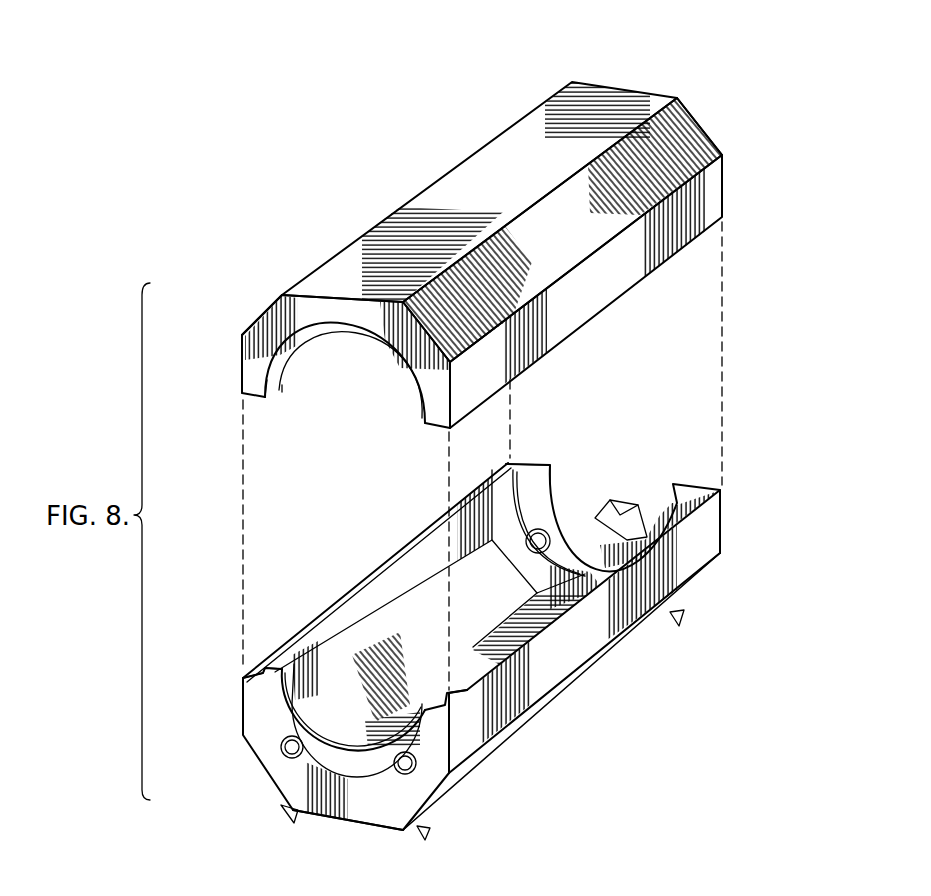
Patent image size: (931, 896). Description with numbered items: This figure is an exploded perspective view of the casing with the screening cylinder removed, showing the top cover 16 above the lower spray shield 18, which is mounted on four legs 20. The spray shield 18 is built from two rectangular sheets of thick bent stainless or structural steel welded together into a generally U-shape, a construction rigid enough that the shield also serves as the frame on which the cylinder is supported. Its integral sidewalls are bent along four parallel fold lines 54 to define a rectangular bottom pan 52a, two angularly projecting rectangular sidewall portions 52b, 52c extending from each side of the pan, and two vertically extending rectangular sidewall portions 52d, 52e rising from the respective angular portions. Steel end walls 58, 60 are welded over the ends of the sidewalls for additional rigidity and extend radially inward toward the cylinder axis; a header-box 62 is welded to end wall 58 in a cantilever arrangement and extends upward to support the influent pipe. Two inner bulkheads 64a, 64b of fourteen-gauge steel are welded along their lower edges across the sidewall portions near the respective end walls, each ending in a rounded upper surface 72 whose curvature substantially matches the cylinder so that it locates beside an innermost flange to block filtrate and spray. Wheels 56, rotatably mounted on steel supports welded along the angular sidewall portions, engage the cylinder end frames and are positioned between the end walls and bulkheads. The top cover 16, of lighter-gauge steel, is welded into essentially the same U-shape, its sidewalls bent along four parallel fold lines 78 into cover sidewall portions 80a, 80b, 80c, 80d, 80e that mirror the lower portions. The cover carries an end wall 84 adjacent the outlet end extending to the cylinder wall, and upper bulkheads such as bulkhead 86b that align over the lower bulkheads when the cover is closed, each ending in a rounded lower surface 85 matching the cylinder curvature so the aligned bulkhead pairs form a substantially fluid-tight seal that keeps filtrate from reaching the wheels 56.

The top cover 16 is at (630, 78).
The lower spray shield 18 is at (732, 563).
The legs 20 is at (296, 812).
The bottom pan sidewall portion 52a is at (372, 750).
The angularly projecting sidewall portion 52b is at (503, 604).
The angularly projecting sidewall portion 52c is at (590, 690).
The vertically extending sidewall portion 52d is at (539, 671).
The vertically extending sidewall portion 52e is at (410, 604).
The fold lines 54 is at (632, 628).
The wheels 56 is at (541, 529).
The end wall 58 is at (724, 489).
The end wall 60 is at (243, 714).
The header-box 62 is at (625, 504).
The inner bulkhead 64a is at (512, 465).
The inner bulkhead 64b is at (262, 670).
The rounded upper surface 72 is at (300, 720).
The fold lines 78 is at (706, 153).
The cover sidewall portion 80a is at (530, 186).
The cover sidewall portion 80b is at (282, 293).
The cover sidewall portion 80c is at (590, 247).
The cover sidewall portion 80d is at (624, 262).
The cover sidewall portion 80e is at (312, 338).
The end wall 84 is at (252, 362).
The rounded lower surface 85 is at (286, 374).
The upper bulkhead 86b is at (282, 390).